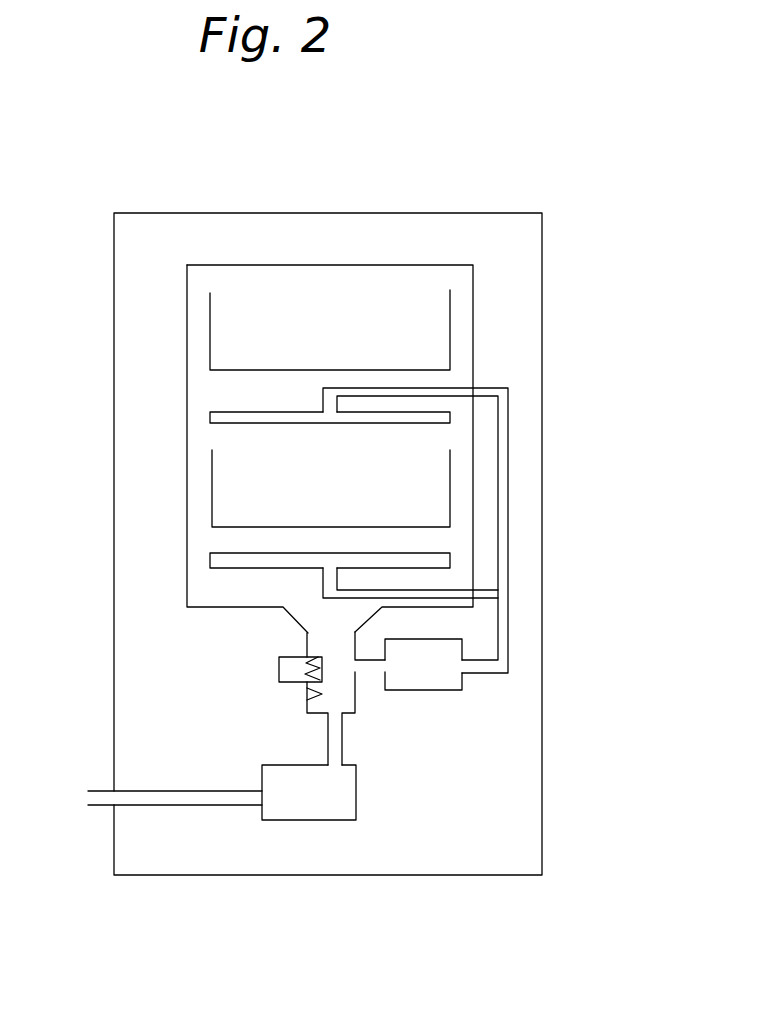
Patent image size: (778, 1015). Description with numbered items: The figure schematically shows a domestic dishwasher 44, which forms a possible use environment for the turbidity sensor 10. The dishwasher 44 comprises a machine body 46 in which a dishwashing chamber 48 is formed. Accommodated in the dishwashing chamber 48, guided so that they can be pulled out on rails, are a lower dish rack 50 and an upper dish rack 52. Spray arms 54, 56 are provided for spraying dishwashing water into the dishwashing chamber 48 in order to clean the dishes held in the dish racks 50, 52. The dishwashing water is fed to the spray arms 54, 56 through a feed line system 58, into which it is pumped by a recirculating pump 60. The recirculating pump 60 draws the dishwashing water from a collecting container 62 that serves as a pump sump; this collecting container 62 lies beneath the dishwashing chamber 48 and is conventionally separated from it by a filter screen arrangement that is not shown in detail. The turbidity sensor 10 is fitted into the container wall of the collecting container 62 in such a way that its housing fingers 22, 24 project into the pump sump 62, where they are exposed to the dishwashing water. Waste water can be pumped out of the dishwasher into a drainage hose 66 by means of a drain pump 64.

The dishwasher 44 is at (553, 131).
The machine body 46 is at (542, 266).
The dishwashing chamber 48 is at (185, 325).
The upper dish rack 52 is at (450, 334).
The spray arm 56 is at (270, 412).
The lower dish rack 50 is at (457, 488).
The spray arm 54 is at (262, 552).
The feed line system 58 is at (510, 570).
The recirculating pump 60 is at (432, 690).
The collecting container 62 is at (355, 697).
The turbidity sensor 10 is at (277, 668).
The housing finger 22 is at (316, 656).
The housing finger 24 is at (320, 688).
The drain pump 64 is at (356, 788).
The drainage hose 66 is at (167, 806).